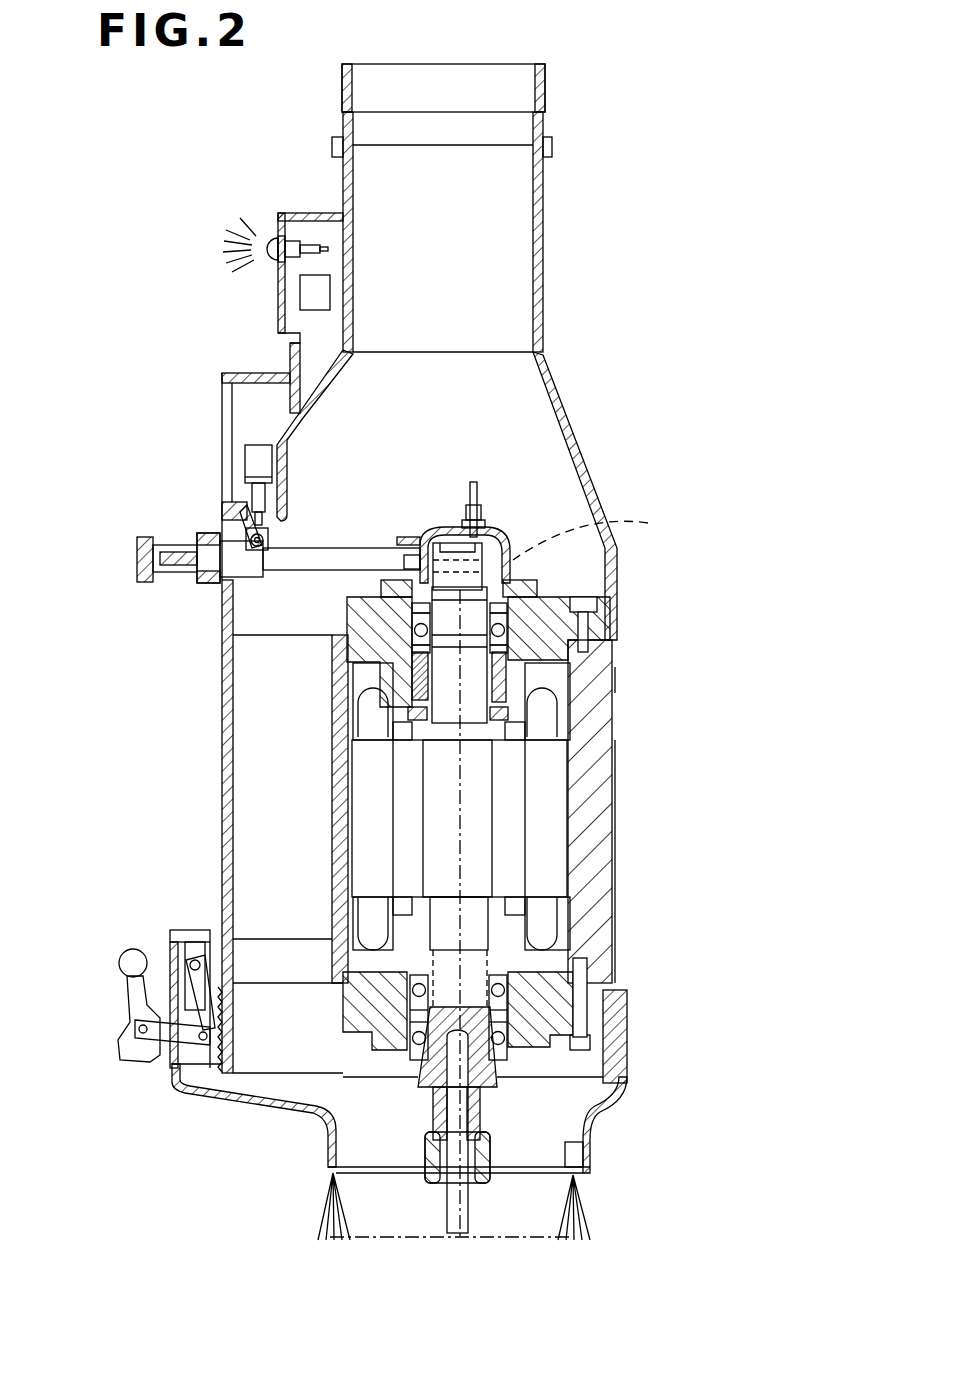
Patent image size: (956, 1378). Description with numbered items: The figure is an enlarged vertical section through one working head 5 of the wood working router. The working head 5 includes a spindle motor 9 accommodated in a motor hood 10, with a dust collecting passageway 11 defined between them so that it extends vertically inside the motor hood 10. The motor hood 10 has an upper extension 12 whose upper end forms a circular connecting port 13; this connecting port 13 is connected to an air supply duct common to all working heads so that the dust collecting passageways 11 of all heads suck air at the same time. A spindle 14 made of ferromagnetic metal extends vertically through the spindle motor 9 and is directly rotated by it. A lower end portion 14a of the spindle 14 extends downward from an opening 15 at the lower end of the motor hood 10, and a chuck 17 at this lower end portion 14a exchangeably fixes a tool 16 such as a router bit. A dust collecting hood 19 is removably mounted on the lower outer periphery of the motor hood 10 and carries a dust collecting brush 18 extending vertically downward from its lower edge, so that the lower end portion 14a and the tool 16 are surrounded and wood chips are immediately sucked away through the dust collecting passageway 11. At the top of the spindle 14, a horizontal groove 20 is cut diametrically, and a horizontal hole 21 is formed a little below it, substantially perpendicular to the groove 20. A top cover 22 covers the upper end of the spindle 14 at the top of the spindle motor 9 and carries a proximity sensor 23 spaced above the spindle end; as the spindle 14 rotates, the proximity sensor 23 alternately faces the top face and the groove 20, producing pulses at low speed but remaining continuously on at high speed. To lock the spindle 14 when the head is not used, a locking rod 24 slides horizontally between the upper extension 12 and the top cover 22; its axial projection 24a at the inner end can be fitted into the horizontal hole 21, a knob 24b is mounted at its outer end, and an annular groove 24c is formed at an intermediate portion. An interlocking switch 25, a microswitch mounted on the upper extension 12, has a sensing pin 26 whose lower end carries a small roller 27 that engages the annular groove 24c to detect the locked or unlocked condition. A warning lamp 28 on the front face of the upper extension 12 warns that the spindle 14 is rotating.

The working head 5 is at (216, 741).
The spindle motor 9 is at (552, 786).
The motor hood 10 is at (222, 692).
The dust collecting passageway 11 is at (292, 802).
The upper extension 12 is at (553, 387).
The connecting port 13 is at (493, 80).
The spindle 14 is at (462, 825).
The lower end portion 14a is at (480, 1108).
The opening 15 is at (310, 1113).
The tool 16 is at (467, 1217).
The chuck 17 is at (437, 1183).
The dust collecting brush 18 is at (590, 1215).
The dust collecting hood 19 is at (200, 1097).
The horizontal groove 20 is at (457, 550).
The horizontal hole 21 is at (648, 530).
The top cover 22 is at (510, 538).
The proximity sensor 23 is at (477, 506).
The locking rod 24 is at (327, 563).
The axial projection 24a is at (422, 540).
The knob 24b is at (137, 557).
The annular groove 24c is at (253, 573).
The interlocking switch 25 is at (262, 455).
The sensing pin 26 is at (222, 524).
The small roller 27 is at (220, 528).
The warning lamp 28 is at (263, 237).